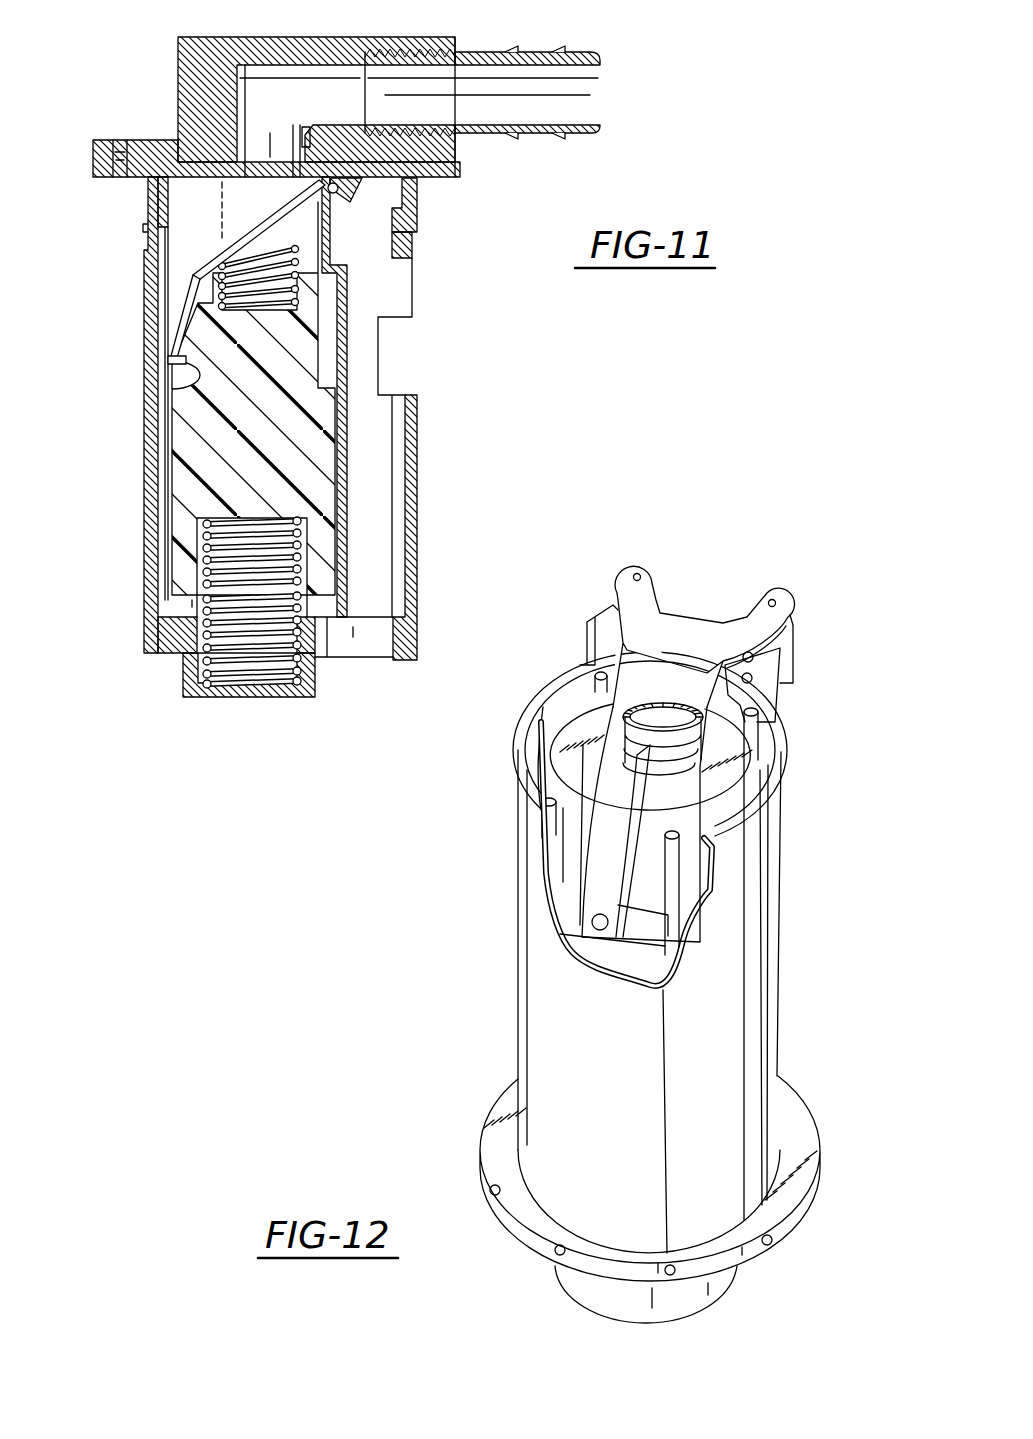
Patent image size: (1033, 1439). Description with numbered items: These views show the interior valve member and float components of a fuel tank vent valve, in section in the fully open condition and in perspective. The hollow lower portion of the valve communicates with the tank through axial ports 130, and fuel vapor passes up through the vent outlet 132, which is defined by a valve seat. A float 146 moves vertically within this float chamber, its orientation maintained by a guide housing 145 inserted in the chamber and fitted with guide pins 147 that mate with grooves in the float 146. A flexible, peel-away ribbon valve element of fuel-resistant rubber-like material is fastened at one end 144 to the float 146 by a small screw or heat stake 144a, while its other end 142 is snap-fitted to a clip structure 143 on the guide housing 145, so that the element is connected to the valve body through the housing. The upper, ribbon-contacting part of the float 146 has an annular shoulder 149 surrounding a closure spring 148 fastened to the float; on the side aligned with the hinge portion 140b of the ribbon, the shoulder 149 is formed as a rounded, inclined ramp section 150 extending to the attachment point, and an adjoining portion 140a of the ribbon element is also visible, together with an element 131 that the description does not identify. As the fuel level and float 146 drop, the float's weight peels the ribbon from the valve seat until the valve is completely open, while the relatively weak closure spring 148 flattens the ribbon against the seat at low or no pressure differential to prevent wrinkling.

In FIG. 12, the axial ports 130 is at (609, 1319).
In FIG. 11, the valve body fitting 131 is at (227, 143).
In FIG. 11, the vent outlet 132 is at (258, 150).
In FIG. 11, the lever lower arm 140a is at (197, 307).
In FIG. 12, the lever lower arm 140a is at (600, 858).
In FIG. 11, the hinge portion 140b is at (260, 222).
In FIG. 12, the hinge portion 140b is at (622, 604).
In FIG. 11, the other end 142 is at (350, 202).
In FIG. 12, the other end 142 is at (783, 593).
In FIG. 11, the clip structure 143 is at (335, 188).
In FIG. 12, the clip structure 143 is at (783, 605).
In FIG. 11, the one end 144 is at (177, 370).
In FIG. 12, the one end 144 is at (588, 915).
In FIG. 11, the small screw or heat stake 144a is at (203, 373).
In FIG. 12, the small screw or heat stake 144a is at (577, 940).
In FIG. 12, the guide housing 145 is at (543, 1027).
In FIG. 11, the float 146 is at (320, 488).
In FIG. 12, the float 146 is at (560, 703).
In FIG. 12, the guide pins 147 is at (745, 711).
In FIG. 12, the closure spring 148 is at (727, 840).
In FIG. 12, the annular shoulder 149 is at (693, 773).
In FIG. 12, the ramp section 150 is at (580, 823).